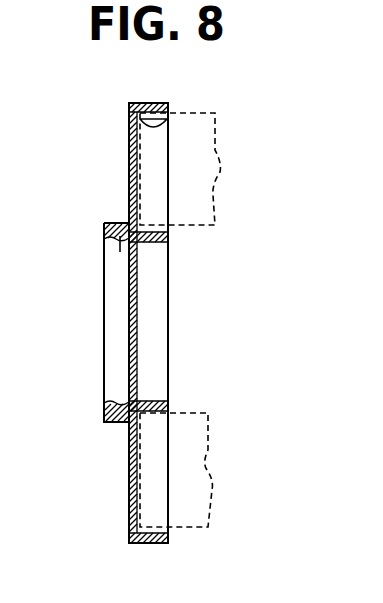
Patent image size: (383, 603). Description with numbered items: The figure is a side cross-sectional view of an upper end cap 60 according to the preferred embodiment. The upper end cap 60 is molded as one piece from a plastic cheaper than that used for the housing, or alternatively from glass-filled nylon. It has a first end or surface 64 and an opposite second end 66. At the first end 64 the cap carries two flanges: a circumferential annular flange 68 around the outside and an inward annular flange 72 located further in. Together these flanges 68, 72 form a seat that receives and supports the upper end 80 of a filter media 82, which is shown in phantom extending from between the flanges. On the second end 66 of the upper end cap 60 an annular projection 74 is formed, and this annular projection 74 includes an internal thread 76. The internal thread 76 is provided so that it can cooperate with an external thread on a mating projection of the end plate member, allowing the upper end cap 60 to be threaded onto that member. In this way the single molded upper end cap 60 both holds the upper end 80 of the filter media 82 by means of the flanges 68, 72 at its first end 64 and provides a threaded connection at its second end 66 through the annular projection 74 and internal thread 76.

The upper end cap 60 is at (79, 115).
The first end 64 is at (168, 125).
The second end 66 is at (133, 158).
The circumferential annular flange 68 is at (135, 103).
The inward annular flange 72 is at (168, 237).
The annular projection 74 is at (103, 229).
The internal thread 76 is at (120, 238).
The upper end of filter media 80 is at (142, 485).
The filter media 82 is at (207, 184).